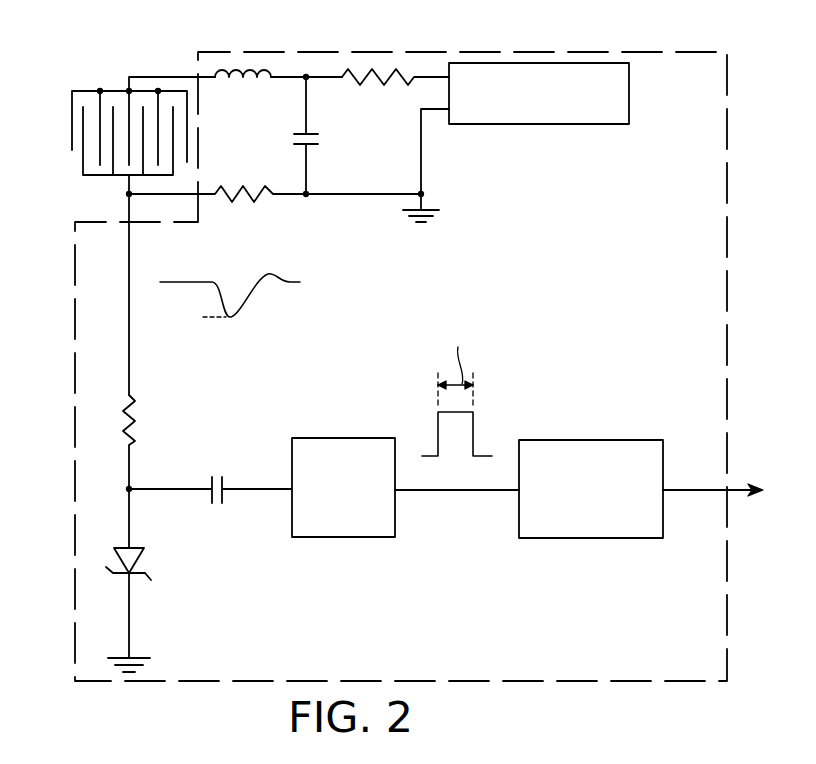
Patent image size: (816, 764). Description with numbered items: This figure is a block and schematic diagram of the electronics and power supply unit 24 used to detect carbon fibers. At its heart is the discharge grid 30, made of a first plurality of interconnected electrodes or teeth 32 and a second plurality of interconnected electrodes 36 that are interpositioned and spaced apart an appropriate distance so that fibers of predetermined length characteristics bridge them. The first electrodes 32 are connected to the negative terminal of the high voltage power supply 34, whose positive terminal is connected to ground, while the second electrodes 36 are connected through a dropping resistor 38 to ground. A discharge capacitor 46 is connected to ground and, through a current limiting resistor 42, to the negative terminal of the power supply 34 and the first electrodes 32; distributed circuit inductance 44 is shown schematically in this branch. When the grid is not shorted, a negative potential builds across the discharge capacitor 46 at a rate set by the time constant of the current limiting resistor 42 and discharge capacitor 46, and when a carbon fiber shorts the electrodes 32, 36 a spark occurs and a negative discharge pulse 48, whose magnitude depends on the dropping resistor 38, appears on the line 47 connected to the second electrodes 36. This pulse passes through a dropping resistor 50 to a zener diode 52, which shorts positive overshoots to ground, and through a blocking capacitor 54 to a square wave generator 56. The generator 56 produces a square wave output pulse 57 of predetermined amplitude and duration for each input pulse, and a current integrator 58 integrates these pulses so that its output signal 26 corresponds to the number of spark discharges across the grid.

The electronics and power supply unit 24 is at (659, 68).
The output signal 26 is at (713, 490).
The discharge grid 30 is at (147, 41).
The first electrodes 32 is at (127, 140).
The high voltage power supply 34 is at (597, 125).
The second electrodes 36 is at (97, 162).
The dropping resistor 38 is at (240, 200).
The current limiting resistor 42 is at (379, 90).
The distributed circuit inductance 44 is at (246, 80).
The discharge capacitor 46 is at (293, 137).
The line 47 is at (129, 262).
The negative discharge pulse 48 is at (254, 292).
The dropping resistor 50 is at (135, 415).
The zener diode 52 is at (138, 553).
The blocking capacitor 54 is at (222, 477).
The square wave generator 56 is at (352, 538).
The square wave output pulse 57 is at (477, 433).
The current integrator 58 is at (608, 540).